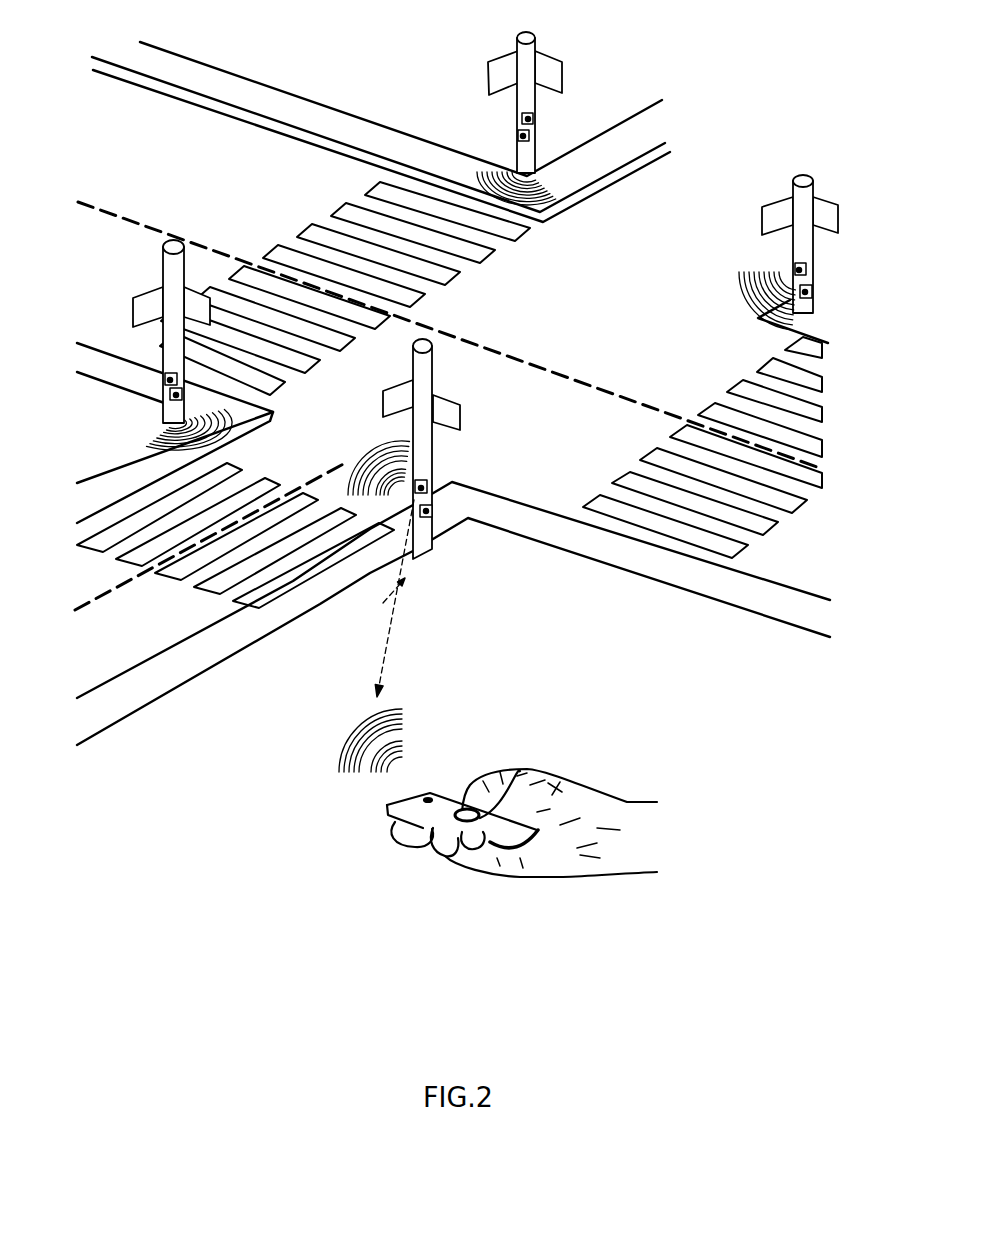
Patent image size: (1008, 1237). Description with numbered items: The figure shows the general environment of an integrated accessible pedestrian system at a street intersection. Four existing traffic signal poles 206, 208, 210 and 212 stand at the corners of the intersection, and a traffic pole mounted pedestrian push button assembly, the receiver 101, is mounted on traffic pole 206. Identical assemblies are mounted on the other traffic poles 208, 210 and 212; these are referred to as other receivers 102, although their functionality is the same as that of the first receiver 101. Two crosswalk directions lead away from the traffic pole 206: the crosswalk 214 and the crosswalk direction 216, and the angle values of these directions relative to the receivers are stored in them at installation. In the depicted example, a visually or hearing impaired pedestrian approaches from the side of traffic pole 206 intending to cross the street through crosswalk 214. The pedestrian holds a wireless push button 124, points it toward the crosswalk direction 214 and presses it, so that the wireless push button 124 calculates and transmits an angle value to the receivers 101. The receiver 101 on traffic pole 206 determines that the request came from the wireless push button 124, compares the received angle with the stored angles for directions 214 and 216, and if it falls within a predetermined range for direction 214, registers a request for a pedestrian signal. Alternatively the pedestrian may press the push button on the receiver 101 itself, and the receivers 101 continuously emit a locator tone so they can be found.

The receiver 101 is at (427, 488).
The other receiver 102 is at (533, 118).
The wireless push button 124 is at (388, 806).
The traffic pole 206 is at (433, 362).
The traffic pole 208 is at (184, 260).
The traffic pole 210 is at (537, 53).
The traffic pole 212 is at (790, 193).
The crosswalk 214 is at (287, 489).
The crosswalk direction 216 is at (730, 380).